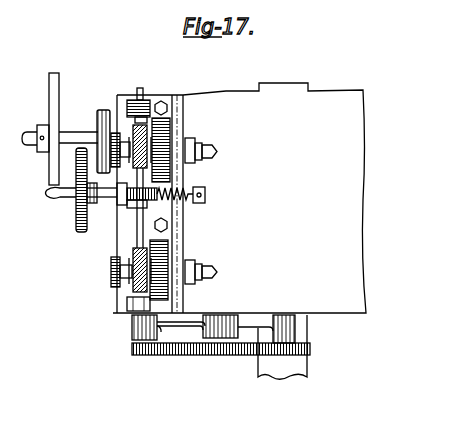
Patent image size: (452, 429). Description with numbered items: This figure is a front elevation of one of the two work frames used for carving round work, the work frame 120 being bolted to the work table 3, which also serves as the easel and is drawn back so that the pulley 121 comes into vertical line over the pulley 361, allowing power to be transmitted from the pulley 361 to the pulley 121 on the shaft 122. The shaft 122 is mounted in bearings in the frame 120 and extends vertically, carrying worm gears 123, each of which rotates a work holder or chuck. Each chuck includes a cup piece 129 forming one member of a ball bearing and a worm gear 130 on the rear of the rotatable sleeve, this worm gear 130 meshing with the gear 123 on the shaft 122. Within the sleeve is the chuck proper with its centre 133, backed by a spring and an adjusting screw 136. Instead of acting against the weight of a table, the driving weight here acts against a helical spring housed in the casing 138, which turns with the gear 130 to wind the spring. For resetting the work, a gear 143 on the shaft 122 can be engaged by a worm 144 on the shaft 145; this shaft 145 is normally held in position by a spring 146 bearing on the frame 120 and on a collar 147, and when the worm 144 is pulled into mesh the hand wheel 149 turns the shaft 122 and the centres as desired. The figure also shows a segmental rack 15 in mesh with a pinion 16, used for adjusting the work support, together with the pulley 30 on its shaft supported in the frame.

The work table 3 is at (239, 198).
The segmental rack 15 is at (231, 354).
The pinion 16 is at (146, 355).
The pulley 30 is at (49, 74).
The work frame 120 is at (185, 236).
The pulley 121 is at (143, 101).
The shaft 122 is at (136, 226).
The worm gear 123 is at (133, 283).
The cup piece 129 is at (191, 266).
The worm gear 130 is at (138, 300).
The centre 133 is at (215, 272).
The adjusting screw 136 is at (110, 271).
The casing 138 is at (168, 298).
The gear 143 is at (124, 208).
The worm 144 is at (160, 200).
The shaft 145 is at (105, 198).
The spring 146 is at (193, 203).
The collar 147 is at (206, 195).
The hand wheel 149 is at (75, 213).
The pulley 361 is at (100, 110).